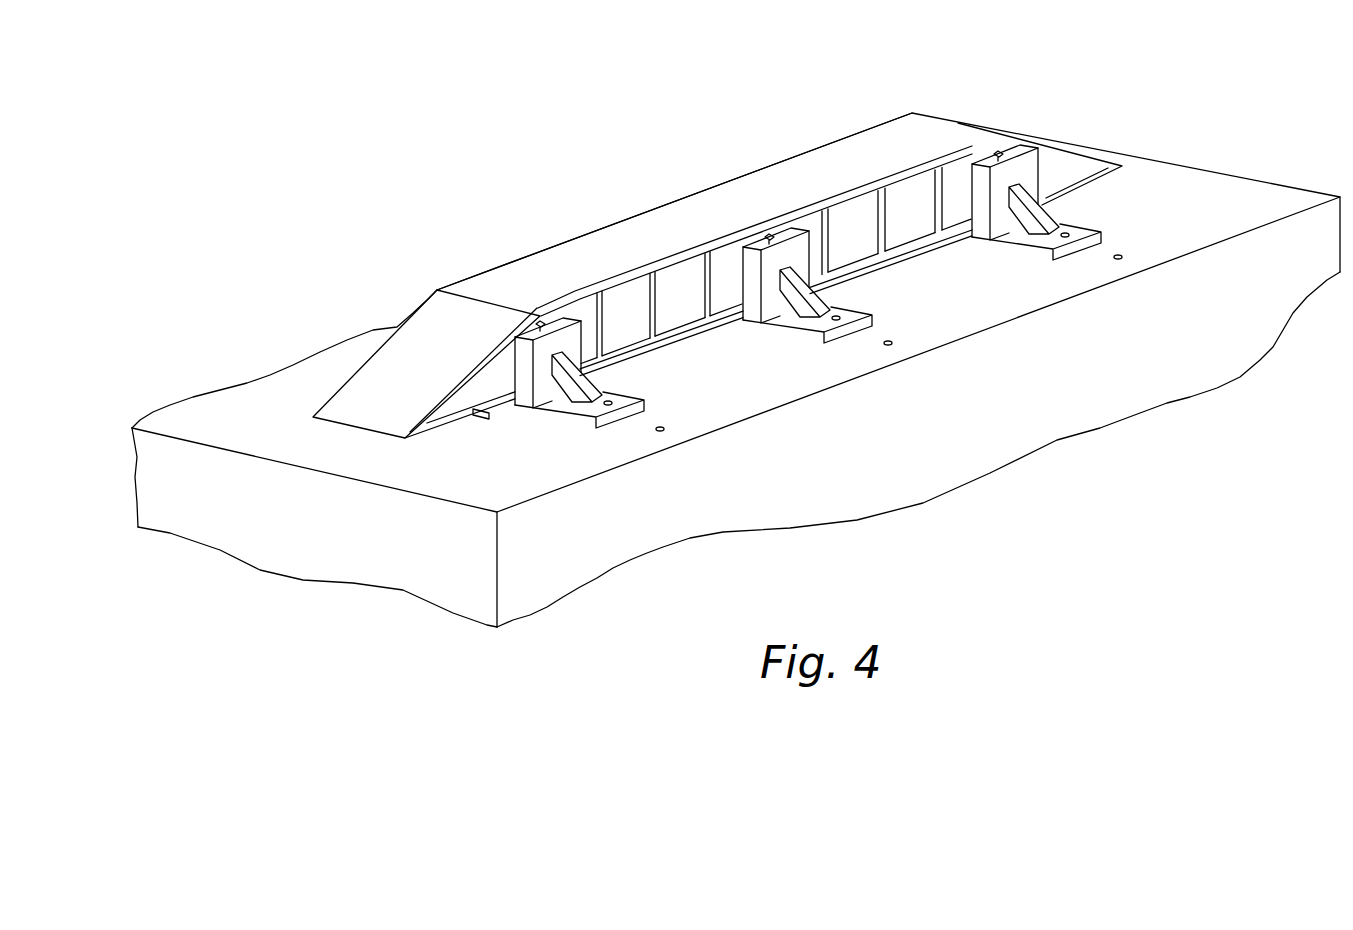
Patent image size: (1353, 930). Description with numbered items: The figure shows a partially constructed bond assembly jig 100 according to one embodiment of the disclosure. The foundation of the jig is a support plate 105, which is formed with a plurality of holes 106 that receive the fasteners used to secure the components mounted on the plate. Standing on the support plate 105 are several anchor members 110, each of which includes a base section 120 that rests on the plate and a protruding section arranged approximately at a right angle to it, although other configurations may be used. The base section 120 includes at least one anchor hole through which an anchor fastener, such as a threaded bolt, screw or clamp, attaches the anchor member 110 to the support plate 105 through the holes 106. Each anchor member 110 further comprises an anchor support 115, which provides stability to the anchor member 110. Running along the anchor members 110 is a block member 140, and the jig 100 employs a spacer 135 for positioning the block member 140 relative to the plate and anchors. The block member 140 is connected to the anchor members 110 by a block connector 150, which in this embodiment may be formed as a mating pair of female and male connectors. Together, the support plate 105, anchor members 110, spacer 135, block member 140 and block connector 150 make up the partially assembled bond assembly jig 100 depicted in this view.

The bond assembly jig 100 is at (972, 64).
The support plate 105 is at (550, 477).
The holes 106 is at (662, 432).
The anchor member 110 is at (1042, 173).
The anchor support 115 is at (612, 382).
The base section 120 is at (578, 335).
The spacer 135 is at (478, 413).
The block member 140 is at (667, 223).
The block connector 150 is at (998, 152).